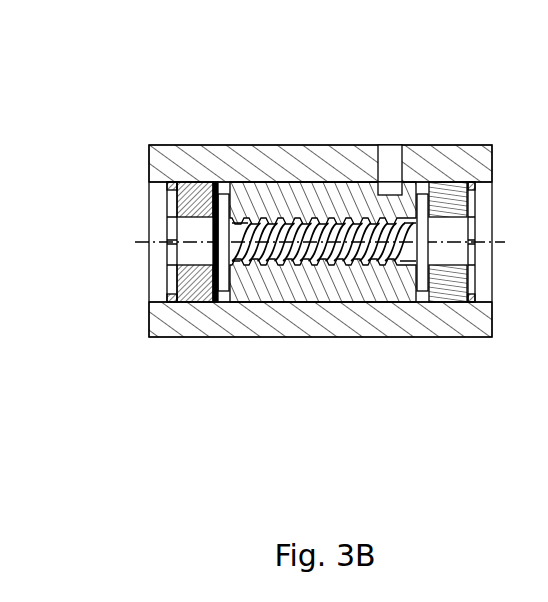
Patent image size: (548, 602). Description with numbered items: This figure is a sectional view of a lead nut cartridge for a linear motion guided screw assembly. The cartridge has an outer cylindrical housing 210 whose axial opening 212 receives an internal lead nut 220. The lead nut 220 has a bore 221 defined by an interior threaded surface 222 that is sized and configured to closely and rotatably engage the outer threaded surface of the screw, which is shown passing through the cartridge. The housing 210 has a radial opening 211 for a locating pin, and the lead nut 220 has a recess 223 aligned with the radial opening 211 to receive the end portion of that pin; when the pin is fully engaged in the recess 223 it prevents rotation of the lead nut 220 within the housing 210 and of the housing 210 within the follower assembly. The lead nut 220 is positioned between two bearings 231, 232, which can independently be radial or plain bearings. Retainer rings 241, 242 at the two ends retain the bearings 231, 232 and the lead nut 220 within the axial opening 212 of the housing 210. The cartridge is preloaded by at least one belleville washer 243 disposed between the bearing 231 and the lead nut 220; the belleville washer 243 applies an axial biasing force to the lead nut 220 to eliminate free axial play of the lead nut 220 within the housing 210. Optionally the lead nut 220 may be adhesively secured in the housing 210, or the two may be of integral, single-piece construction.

The outer cylindrical housing 210 is at (215, 144).
The radial opening 211 is at (386, 145).
The axial opening 212 is at (298, 304).
The lead nut 220 is at (329, 232).
The bore 221 is at (261, 266).
The interior threaded surface 222 is at (387, 262).
The recess 223 is at (380, 183).
The bearing 231 is at (186, 178).
The bearing 232 is at (448, 182).
The retainer ring 241 is at (167, 214).
The retainer ring 242 is at (472, 302).
The belleville washer 243 is at (216, 302).